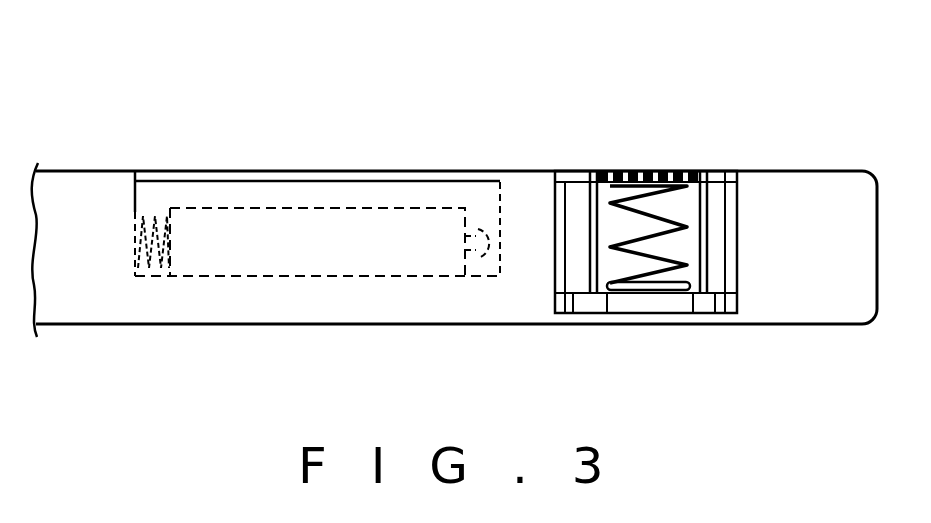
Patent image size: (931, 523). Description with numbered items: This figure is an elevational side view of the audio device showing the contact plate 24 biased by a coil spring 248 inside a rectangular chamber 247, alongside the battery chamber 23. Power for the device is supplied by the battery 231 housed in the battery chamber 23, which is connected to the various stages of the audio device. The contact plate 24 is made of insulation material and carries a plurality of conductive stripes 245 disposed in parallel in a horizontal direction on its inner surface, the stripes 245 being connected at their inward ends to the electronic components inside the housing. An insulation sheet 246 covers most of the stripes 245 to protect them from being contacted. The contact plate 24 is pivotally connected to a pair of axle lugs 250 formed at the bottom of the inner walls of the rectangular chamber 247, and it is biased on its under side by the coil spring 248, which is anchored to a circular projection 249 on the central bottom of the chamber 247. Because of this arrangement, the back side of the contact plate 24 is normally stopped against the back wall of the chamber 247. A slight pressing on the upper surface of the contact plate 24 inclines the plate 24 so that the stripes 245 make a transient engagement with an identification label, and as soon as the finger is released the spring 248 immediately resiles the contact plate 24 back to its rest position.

The battery chamber 23 is at (383, 171).
The battery 231 is at (252, 227).
The contact plate 24 is at (588, 125).
The conductive stripes 245 is at (650, 172).
The insulation sheet 246 is at (695, 200).
The rectangular chamber 247 is at (718, 196).
The coil spring 248 is at (617, 200).
The circular projection 249 is at (620, 302).
The axle lugs 250 is at (718, 305).